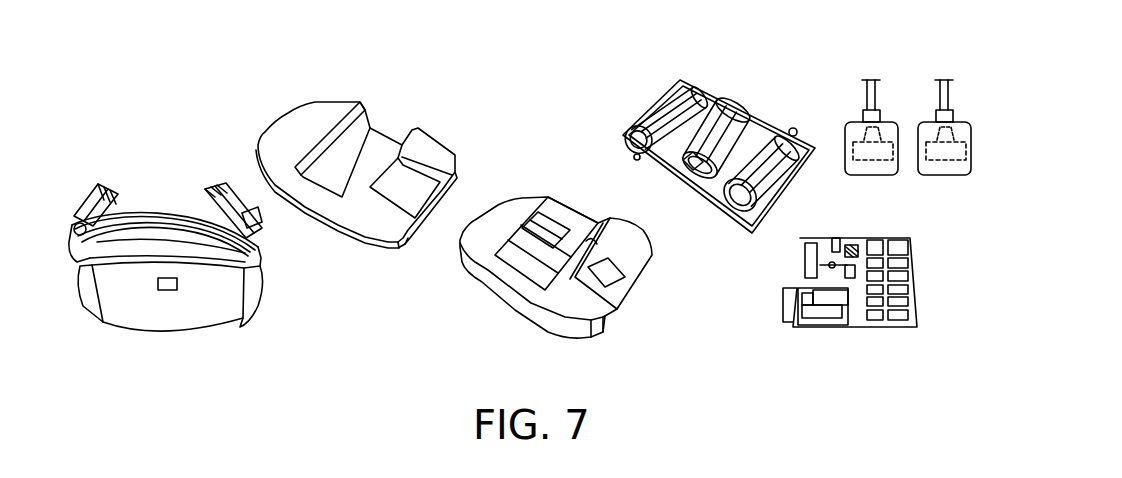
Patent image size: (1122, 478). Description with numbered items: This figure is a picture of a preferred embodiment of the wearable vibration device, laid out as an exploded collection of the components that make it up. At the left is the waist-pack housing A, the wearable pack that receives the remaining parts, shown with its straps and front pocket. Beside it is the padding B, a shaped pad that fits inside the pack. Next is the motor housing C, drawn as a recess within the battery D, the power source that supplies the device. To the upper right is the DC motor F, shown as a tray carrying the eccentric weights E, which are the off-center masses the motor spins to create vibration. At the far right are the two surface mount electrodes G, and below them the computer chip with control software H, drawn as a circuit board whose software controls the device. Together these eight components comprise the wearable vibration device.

The waist-pack housing A is at (163, 167).
The padding B is at (362, 253).
The motor housing C is at (573, 187).
The battery D is at (581, 229).
The eccentric weights E is at (648, 176).
The DC motor F is at (717, 157).
The surface mount electrodes G is at (878, 183).
The computer chip with control software H is at (927, 287).